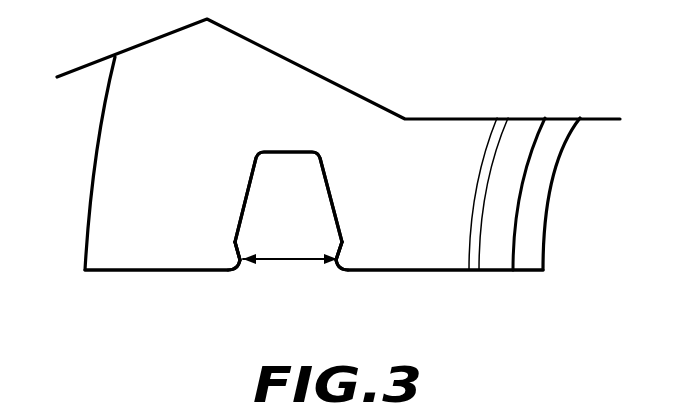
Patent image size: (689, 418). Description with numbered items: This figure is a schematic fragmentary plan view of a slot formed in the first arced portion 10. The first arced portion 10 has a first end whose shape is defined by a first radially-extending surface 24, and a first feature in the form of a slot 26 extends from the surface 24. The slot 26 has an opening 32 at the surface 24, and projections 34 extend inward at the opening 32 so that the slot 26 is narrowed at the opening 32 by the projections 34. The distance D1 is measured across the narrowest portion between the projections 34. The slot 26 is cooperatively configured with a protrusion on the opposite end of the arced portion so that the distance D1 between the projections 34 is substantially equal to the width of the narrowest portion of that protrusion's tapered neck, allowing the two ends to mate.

The first arced portion 10 is at (103, 175).
The first radially-extending surface 24 is at (153, 276).
The slot 26 is at (250, 198).
The opening 32 is at (294, 278).
The projections 34 is at (243, 262).
The distance D1 is at (298, 258).